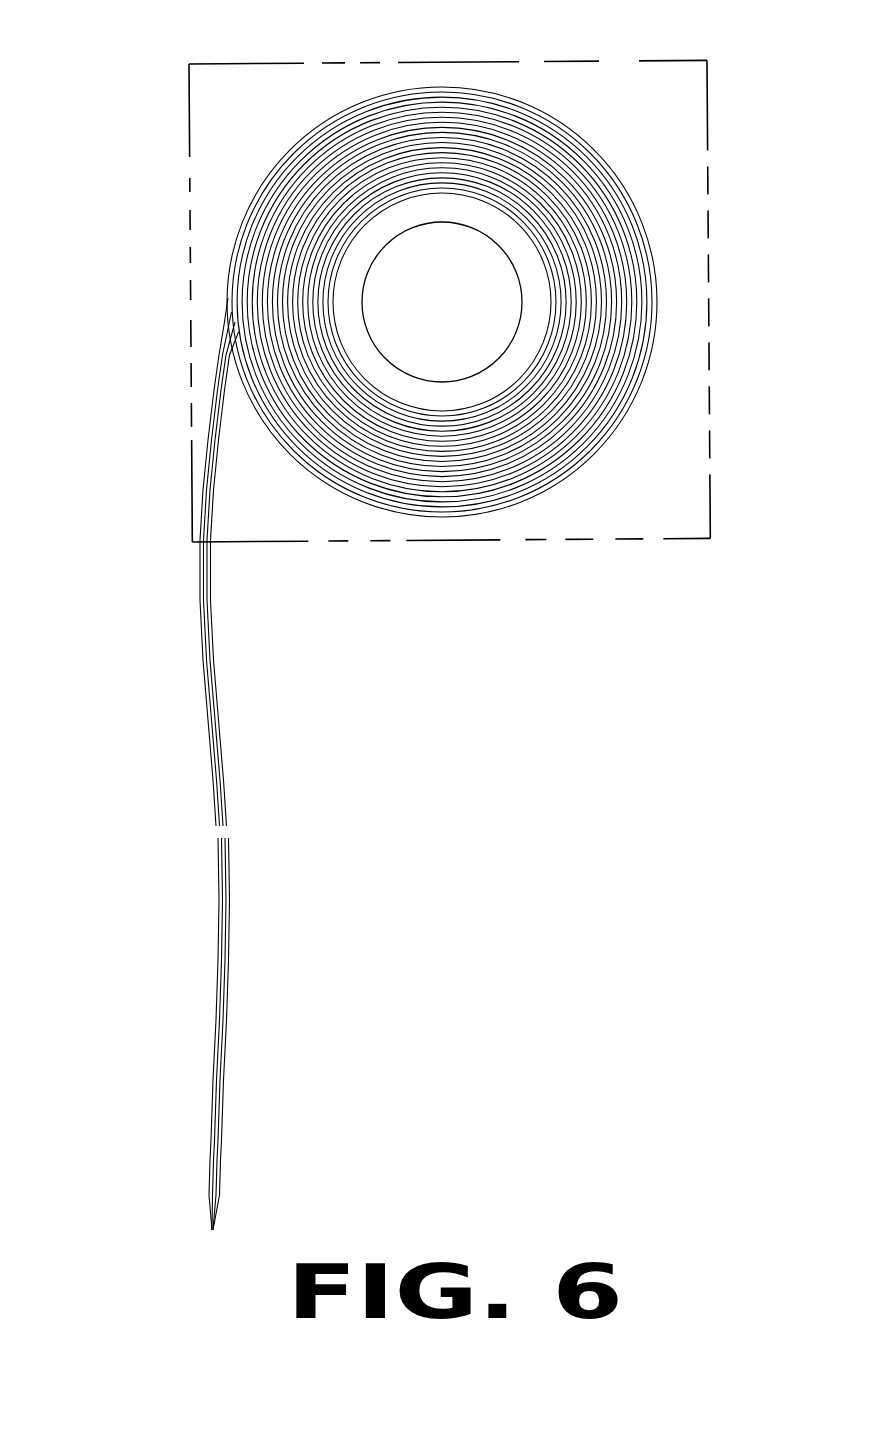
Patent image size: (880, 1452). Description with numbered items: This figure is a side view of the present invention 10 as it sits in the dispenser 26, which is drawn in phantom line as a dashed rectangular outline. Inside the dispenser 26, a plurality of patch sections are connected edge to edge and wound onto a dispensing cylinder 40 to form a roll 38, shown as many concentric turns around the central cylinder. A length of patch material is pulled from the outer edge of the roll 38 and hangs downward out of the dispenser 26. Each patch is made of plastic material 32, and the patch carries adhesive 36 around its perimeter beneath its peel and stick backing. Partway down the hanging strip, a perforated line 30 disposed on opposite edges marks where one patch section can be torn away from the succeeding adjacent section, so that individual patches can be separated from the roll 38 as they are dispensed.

The present invention 10 is at (429, 357).
The dispenser box 26 is at (187, 177).
The perforated line 30 is at (220, 827).
The plastic material 32 is at (220, 1112).
The adhesive 36 is at (220, 988).
The roll 38 is at (463, 497).
The dispensing cylinder 40 is at (533, 313).